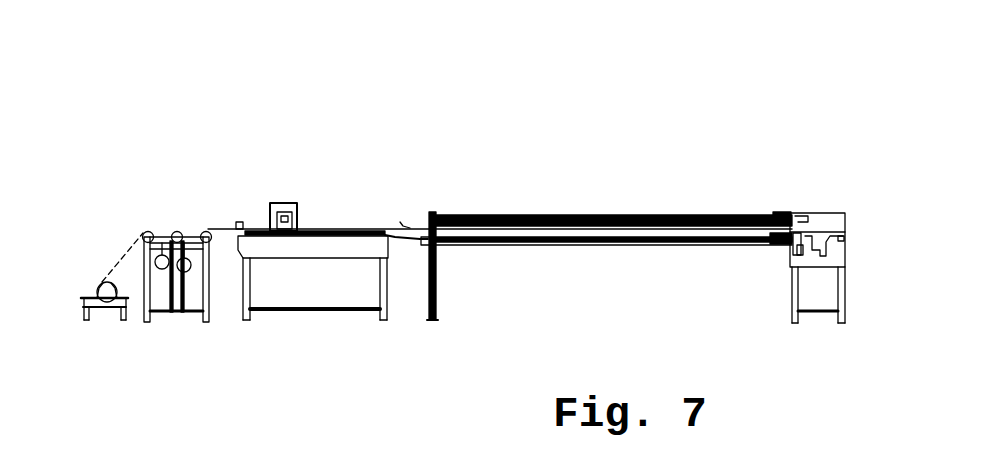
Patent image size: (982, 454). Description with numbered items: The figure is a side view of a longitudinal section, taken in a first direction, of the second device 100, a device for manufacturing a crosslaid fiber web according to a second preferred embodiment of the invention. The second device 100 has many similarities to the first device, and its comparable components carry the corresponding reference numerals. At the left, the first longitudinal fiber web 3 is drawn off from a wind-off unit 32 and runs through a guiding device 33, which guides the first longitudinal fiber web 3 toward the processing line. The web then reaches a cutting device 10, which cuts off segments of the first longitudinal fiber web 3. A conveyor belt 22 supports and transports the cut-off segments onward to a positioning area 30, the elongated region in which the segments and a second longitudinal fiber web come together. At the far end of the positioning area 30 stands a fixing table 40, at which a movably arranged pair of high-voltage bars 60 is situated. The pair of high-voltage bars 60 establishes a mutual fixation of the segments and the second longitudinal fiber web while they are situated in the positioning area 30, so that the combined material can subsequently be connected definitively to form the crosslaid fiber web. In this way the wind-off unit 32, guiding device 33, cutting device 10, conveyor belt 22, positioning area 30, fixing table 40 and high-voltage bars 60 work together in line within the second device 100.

The second device 100 is at (482, 155).
The first longitudinal fiber web 3 is at (117, 254).
The cutting device 10 is at (282, 187).
The conveyor belt 22 is at (402, 218).
The positioning area 30 is at (587, 190).
The wind-off unit 32 is at (103, 328).
The guiding device 33 is at (178, 208).
The fixing table 40 is at (823, 190).
The pair of high-voltage bars 60 is at (776, 197).